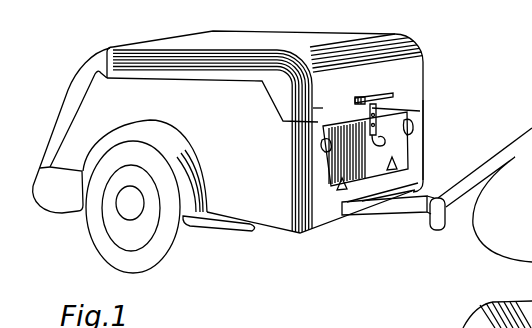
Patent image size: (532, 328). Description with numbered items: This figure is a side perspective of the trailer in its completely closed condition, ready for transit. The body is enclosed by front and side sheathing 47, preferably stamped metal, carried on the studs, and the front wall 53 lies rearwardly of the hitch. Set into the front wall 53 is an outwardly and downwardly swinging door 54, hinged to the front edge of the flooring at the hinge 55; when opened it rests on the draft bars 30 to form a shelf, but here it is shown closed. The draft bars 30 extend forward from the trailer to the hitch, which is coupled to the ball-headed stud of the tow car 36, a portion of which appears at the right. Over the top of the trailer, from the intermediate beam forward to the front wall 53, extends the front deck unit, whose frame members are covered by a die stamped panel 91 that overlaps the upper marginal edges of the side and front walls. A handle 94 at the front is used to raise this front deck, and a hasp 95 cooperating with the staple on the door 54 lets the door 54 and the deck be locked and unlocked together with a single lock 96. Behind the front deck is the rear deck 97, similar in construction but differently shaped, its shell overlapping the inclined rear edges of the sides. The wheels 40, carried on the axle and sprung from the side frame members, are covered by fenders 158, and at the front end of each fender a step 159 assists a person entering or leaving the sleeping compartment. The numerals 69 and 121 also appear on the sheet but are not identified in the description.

The lid 69 is at (303, 27).
The rear deck 97 is at (70, 75).
The die stamped panel 91 is at (419, 67).
The handle 94 is at (384, 93).
The hasp 95 is at (390, 101).
The lock 96 is at (382, 138).
The hinge 55 is at (403, 128).
The door 54 is at (398, 147).
The fender 158 is at (60, 196).
The wheel 40 is at (100, 238).
The step 159 is at (222, 225).
The sheathing 47 is at (266, 193).
The front wall 53 is at (326, 209).
The draft bar 30 is at (380, 209).
The tow car 36 is at (485, 230).
The tire 121 is at (476, 314).